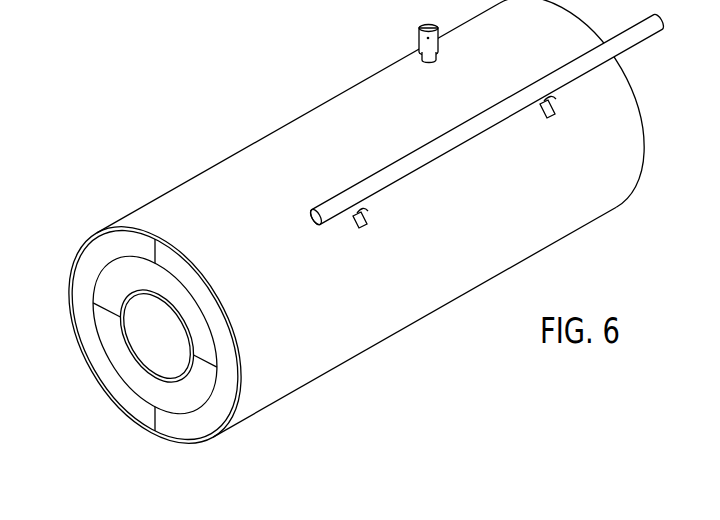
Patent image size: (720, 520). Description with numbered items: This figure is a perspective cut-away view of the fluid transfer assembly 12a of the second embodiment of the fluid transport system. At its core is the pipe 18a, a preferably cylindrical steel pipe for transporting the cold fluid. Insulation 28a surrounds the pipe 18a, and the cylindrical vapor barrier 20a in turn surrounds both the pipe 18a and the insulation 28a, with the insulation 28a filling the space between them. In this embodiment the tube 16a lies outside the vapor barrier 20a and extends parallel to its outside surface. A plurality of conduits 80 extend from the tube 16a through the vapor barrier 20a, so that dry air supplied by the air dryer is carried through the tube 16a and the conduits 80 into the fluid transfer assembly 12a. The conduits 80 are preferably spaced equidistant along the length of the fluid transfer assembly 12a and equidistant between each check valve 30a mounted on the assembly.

The fluid transfer assembly 12a is at (226, 118).
The vapor barrier 20a is at (124, 204).
The insulation 28a is at (118, 278).
The pipe 18a is at (126, 345).
The tube 16a is at (643, 33).
The conduits 80 is at (366, 208).
The check valve 30a is at (406, 19).